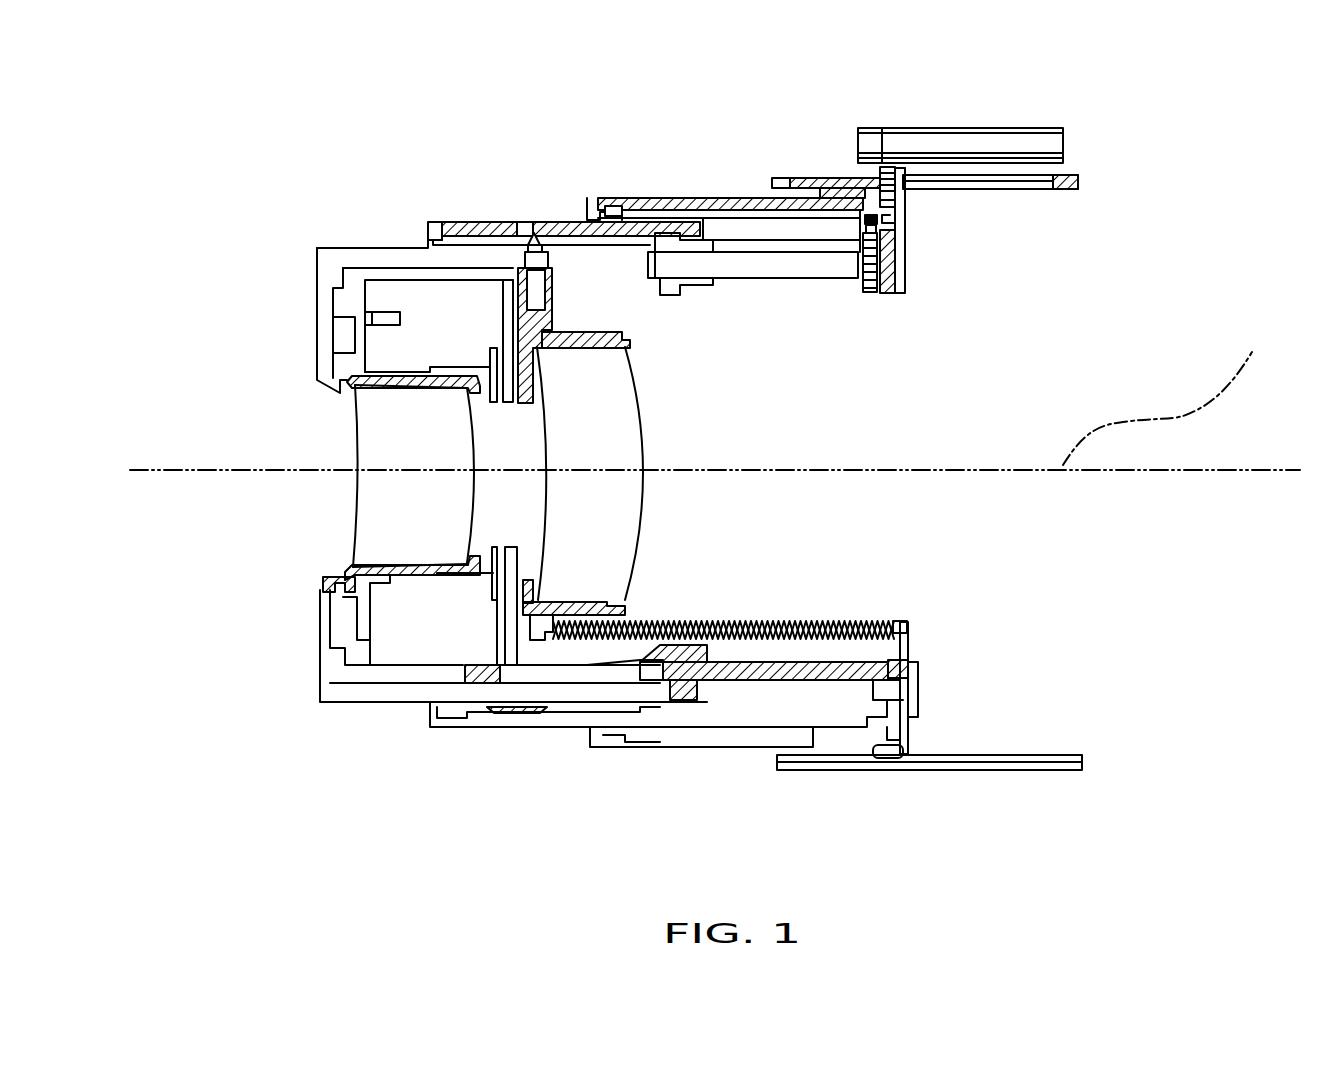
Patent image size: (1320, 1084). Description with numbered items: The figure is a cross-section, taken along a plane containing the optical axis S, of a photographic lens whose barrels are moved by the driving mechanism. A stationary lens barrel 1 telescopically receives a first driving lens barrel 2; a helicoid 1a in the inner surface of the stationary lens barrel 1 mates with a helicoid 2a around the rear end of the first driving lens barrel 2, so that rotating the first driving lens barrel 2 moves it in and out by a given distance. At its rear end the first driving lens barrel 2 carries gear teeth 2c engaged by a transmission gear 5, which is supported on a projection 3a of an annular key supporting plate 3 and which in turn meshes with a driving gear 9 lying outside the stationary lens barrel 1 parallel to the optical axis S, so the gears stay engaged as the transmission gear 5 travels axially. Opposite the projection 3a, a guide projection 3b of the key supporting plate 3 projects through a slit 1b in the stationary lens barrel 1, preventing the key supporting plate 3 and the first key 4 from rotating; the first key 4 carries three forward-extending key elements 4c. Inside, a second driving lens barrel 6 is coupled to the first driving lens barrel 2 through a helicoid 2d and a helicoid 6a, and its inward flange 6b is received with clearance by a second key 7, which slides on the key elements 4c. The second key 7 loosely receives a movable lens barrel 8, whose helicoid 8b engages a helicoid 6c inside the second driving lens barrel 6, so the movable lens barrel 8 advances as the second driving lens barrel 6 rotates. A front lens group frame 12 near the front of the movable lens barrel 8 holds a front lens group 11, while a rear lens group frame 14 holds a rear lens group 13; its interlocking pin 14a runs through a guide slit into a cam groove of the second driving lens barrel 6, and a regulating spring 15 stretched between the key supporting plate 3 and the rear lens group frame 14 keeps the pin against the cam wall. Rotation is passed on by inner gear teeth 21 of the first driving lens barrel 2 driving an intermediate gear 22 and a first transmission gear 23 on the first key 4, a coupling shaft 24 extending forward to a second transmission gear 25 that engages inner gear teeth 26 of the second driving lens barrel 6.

The stationary lens barrel 1 is at (1047, 182).
The helicoid 1a is at (1020, 190).
The slit 1b is at (1015, 752).
The first driving lens barrel 2 is at (713, 200).
The helicoid 2a is at (828, 185).
The gear teeth 2c is at (896, 203).
The helicoid 2d is at (762, 210).
The key supporting plate 3 is at (906, 268).
The projection 3a is at (910, 175).
The guide projection 3b is at (893, 757).
The first key 4 is at (763, 672).
The key elements 4c is at (790, 665).
The transmission gear 5 is at (878, 167).
The second driving lens barrel 6 is at (572, 222).
The helicoid 6a is at (677, 222).
The flange 6b is at (717, 237).
The helicoid 6c is at (556, 232).
The second key 7 is at (573, 670).
The movable lens barrel 8 is at (357, 248).
The helicoid 8b is at (500, 224).
The driving gear 9 is at (933, 137).
The front lens group 11 is at (375, 532).
The front lens group frame 12 is at (360, 385).
The rear lens group 13 is at (620, 510).
The rear lens group frame 14 is at (598, 590).
The interlocking pin 14a is at (547, 250).
The regulating spring 15 is at (883, 627).
The inner gear teeth 21 is at (862, 223).
The intermediate gear 22 is at (900, 237).
The first transmission gear 23 is at (873, 293).
The coupling shaft 24 is at (818, 270).
The second transmission gear 25 is at (677, 297).
The inner gear teeth 26 is at (643, 210).
The optical axis S is at (1165, 386).